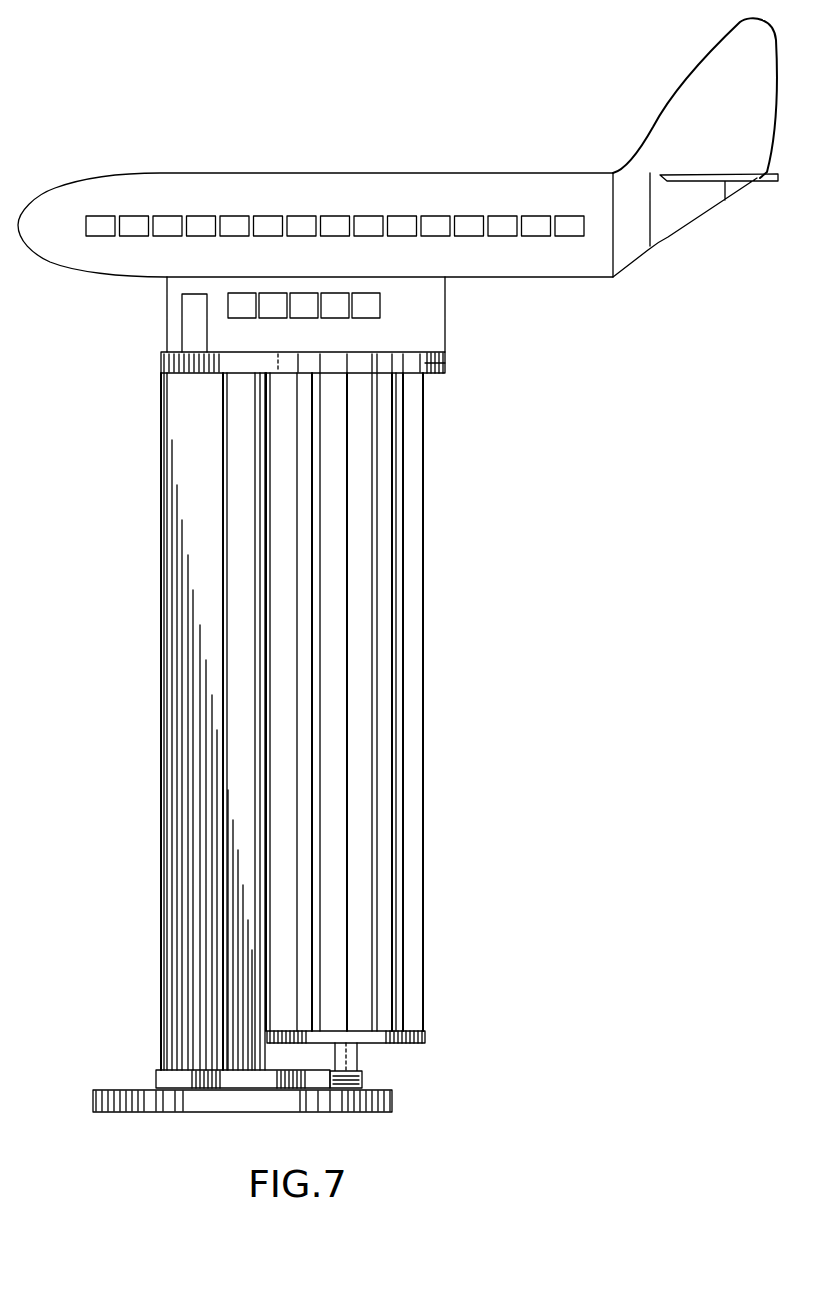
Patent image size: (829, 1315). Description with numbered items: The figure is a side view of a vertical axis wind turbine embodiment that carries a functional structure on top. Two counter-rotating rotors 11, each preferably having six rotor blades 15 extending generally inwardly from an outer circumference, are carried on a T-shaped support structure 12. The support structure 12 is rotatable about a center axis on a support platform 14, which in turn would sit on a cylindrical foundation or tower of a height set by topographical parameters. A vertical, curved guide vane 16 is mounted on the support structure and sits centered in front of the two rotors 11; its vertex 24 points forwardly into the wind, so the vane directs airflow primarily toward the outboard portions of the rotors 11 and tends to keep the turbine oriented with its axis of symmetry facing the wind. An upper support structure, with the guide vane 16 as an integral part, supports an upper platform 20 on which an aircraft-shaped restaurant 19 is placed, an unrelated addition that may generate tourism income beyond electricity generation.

The aircraft-shaped restaurant 19 is at (203, 185).
The upper platform 20 is at (445, 363).
The rotor blades 15 is at (423, 557).
The rotors 11 is at (433, 760).
The guide vane 16 is at (182, 760).
The vertex 24 is at (161, 550).
The support structure 12 is at (180, 1083).
The support platform 14 is at (150, 1100).